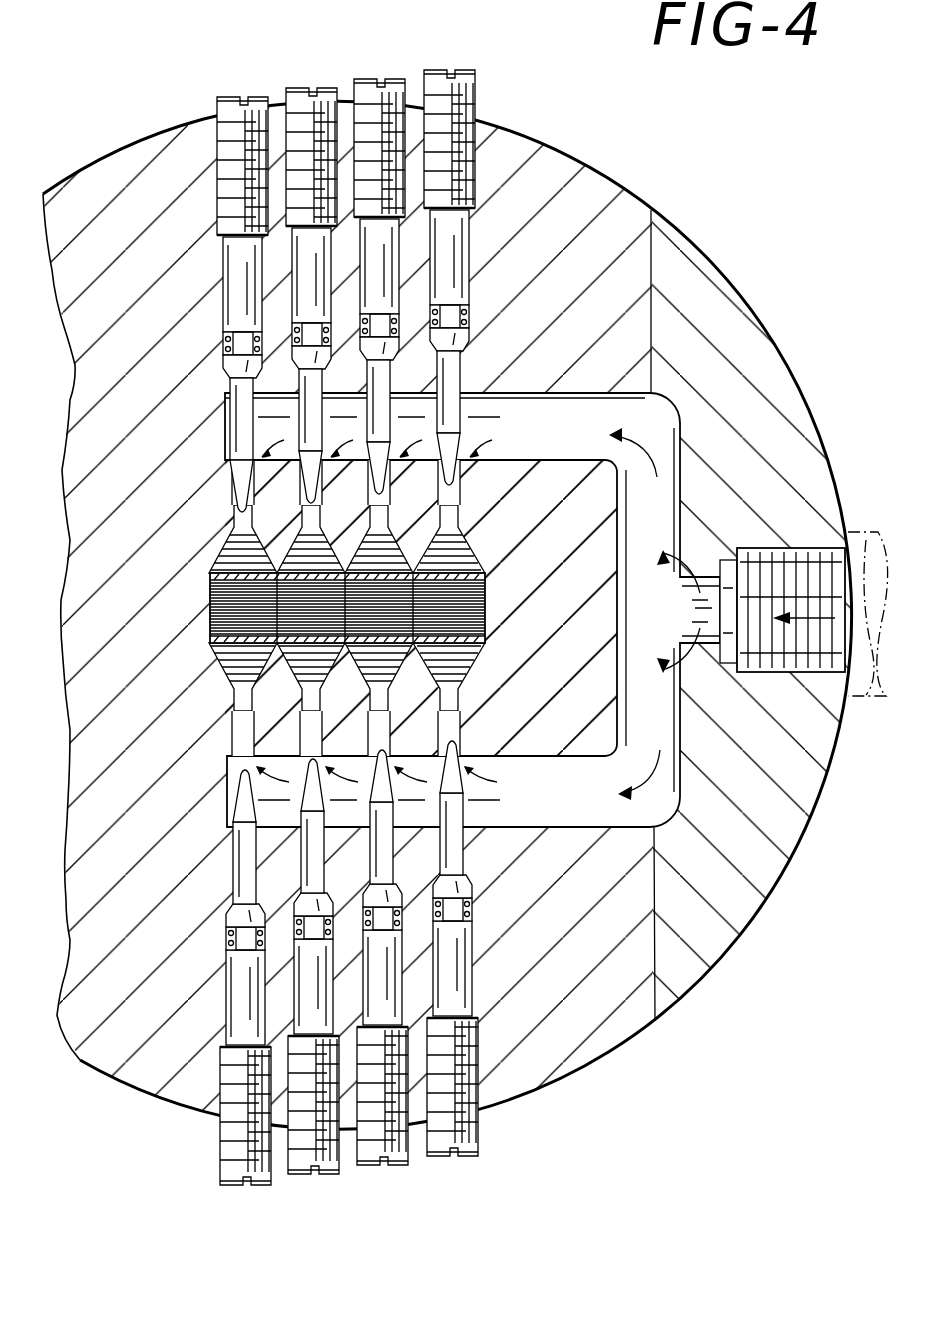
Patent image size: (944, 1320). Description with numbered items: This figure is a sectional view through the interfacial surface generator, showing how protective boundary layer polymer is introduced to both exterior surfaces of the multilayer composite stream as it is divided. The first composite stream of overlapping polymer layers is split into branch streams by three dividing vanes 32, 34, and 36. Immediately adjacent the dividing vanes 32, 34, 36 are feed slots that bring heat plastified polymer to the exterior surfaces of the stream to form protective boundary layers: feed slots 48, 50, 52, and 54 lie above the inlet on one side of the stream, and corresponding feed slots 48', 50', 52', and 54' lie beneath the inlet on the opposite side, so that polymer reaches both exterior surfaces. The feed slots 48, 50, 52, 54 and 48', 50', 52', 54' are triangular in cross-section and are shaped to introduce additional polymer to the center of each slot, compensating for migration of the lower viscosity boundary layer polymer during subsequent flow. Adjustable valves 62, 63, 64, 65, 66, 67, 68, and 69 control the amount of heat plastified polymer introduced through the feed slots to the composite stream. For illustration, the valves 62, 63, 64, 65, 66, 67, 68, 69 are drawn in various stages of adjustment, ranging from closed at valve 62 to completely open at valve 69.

The dividing vane 32 is at (212, 598).
The dividing vane 34 is at (461, 538).
The dividing vane 36 is at (485, 603).
The feed slot 48 is at (221, 516).
The feed slot 50 is at (299, 516).
The feed slot 52 is at (367, 516).
The feed slot 54 is at (438, 516).
The feed slot 48' is at (230, 699).
The feed slot 50' is at (302, 699).
The feed slot 52' is at (370, 699).
The feed slot 54' is at (471, 696).
The adjustable valve 62 is at (214, 110).
The adjustable valve 63 is at (292, 88).
The adjustable valve 64 is at (366, 79).
The adjustable valve 65 is at (470, 70).
The adjustable valve 66 is at (470, 1160).
The adjustable valve 67 is at (397, 1166).
The adjustable valve 68 is at (332, 1176).
The adjustable valve 69 is at (228, 1186).